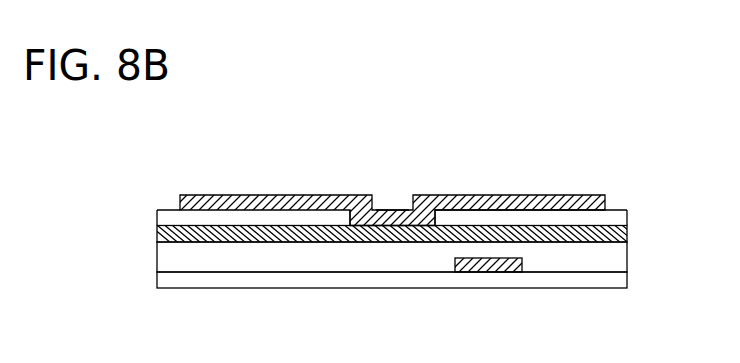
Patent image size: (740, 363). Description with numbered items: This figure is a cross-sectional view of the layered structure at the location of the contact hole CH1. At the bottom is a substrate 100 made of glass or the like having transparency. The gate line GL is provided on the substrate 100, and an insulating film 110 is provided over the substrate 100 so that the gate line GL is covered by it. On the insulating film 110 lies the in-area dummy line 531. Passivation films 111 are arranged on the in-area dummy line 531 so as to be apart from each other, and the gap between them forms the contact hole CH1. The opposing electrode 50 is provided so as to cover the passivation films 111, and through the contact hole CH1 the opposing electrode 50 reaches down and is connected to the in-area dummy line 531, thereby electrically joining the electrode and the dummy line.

The opposing electrode 50 is at (605, 197).
The passivation film 111 is at (612, 218).
The in-area dummy line 531 is at (612, 233).
The insulating film 110 is at (613, 255).
The substrate 100 is at (613, 280).
The gate line GL is at (497, 273).
The contact hole CH1 is at (393, 208).